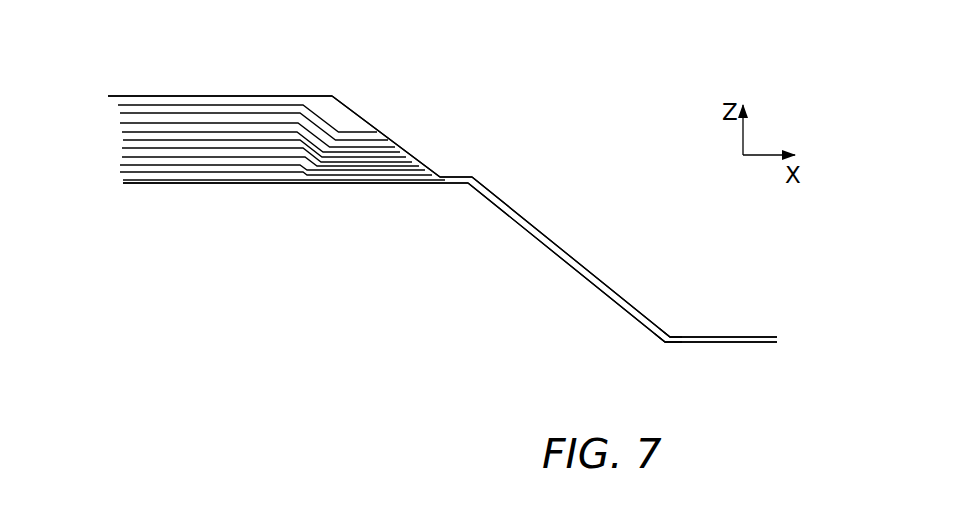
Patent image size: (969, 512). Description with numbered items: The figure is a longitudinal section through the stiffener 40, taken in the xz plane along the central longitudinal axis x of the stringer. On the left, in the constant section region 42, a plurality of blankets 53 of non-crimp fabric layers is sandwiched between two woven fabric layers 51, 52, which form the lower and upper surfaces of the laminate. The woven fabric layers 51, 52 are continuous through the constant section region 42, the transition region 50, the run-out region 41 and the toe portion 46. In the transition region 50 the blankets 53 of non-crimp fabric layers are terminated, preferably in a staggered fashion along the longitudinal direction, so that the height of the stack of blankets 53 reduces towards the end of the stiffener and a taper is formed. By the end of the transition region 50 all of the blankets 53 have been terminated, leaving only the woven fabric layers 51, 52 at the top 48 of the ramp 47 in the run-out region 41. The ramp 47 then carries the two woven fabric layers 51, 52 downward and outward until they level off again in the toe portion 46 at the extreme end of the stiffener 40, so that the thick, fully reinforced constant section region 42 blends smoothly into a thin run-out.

The stiffener 40 is at (647, 135).
The run-out region 41 is at (555, 217).
The constant section region 42 is at (225, 92).
The toe portion 46 is at (758, 315).
The ramp 47 is at (677, 327).
The top of the ramp 48 is at (458, 163).
The transition region 50 is at (388, 122).
The woven fabric layer 51 is at (125, 185).
The woven fabric layer 52 is at (128, 95).
The blankets of non-crimp fabric layers 53 is at (112, 103).